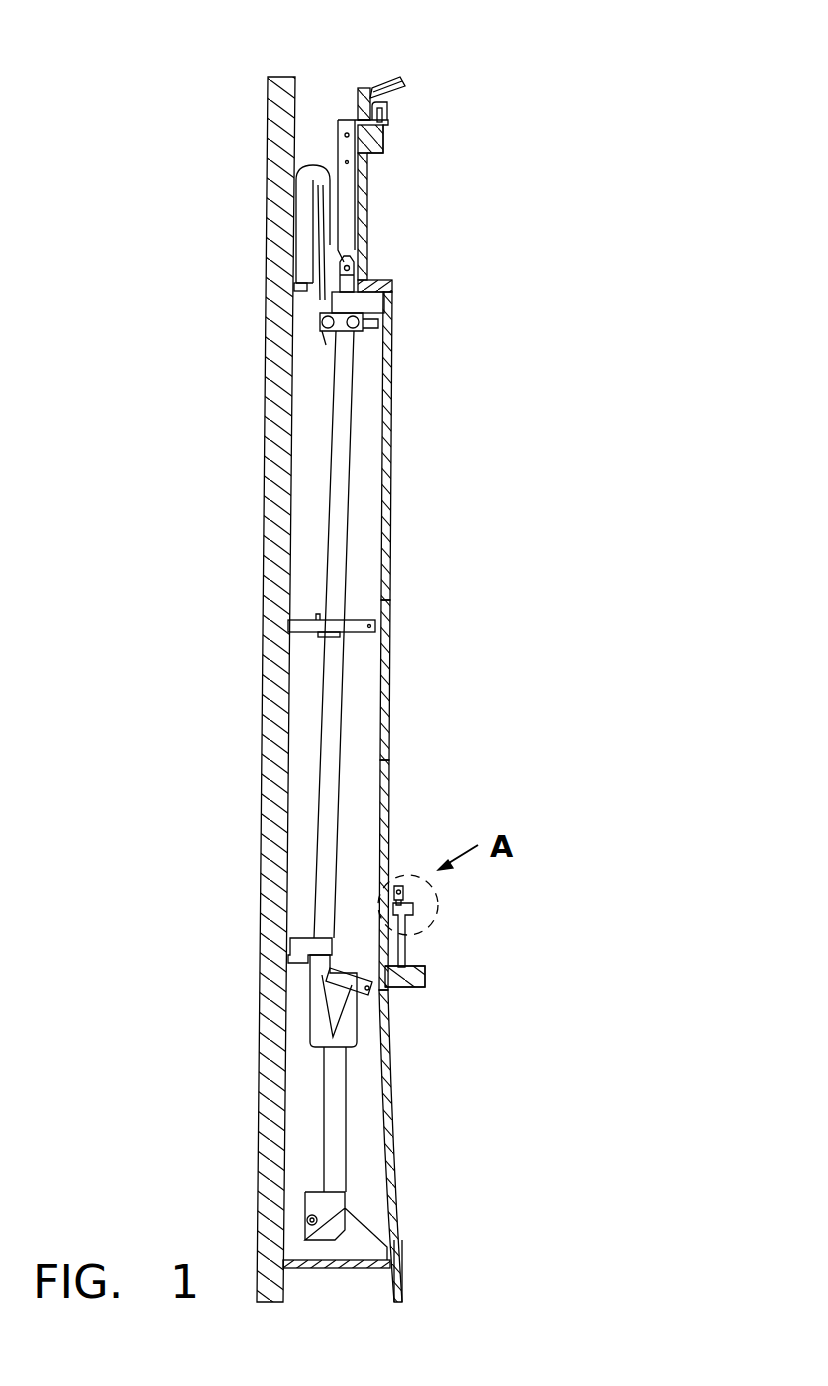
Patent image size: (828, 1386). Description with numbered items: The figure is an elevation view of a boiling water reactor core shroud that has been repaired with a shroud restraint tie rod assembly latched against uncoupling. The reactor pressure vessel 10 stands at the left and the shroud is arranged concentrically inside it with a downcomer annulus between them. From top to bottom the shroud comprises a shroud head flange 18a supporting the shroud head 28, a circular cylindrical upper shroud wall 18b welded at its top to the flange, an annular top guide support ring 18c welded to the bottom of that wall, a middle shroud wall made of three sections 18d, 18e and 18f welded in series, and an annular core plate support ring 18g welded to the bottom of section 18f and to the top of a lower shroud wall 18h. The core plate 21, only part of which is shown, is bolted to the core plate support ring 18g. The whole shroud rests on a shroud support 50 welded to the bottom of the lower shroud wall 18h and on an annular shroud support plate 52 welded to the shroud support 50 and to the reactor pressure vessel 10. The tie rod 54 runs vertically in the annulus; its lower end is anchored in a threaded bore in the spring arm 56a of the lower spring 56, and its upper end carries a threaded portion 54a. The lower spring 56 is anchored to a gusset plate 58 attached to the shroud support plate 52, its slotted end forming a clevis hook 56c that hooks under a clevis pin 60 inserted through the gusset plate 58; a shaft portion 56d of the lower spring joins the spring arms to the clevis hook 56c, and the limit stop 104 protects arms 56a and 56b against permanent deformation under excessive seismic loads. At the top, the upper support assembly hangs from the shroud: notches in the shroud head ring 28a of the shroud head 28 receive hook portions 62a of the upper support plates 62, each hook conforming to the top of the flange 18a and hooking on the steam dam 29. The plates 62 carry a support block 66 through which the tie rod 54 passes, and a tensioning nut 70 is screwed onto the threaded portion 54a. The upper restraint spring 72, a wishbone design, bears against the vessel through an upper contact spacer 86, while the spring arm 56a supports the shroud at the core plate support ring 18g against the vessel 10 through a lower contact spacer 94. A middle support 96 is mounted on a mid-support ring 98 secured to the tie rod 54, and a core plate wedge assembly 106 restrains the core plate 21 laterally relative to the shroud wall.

The reactor pressure vessel 10 is at (266, 538).
The shroud head flange 18a is at (384, 140).
The upper shroud wall 18b is at (368, 227).
The top guide support ring 18c is at (392, 287).
The middle shroud wall section 18d is at (392, 438).
The middle shroud wall section 18e is at (392, 689).
The middle shroud wall section 18f is at (392, 798).
The core plate support ring 18g is at (414, 988).
The lower shroud wall 18h is at (400, 1146).
The core plate 21 is at (407, 953).
The shroud head 28 is at (379, 72).
The shroud head ring 28a is at (357, 100).
The steam dam 29 is at (383, 122).
The shroud support 50 is at (402, 1246).
The shroud support plate 52 is at (330, 1269).
The tie rod 54 is at (318, 787).
The threaded portion 54a is at (352, 280).
The lower spring 56 is at (328, 1107).
The spring arm 56a is at (312, 1018).
The spring arm 56b is at (358, 1010).
The clevis hook 56c is at (338, 1201).
The actuator shaft 56d is at (340, 1098).
The gusset plate 58 is at (293, 1210).
The clevis pin 60 is at (307, 1222).
The upper support plate 62 is at (338, 144).
The hook portion 62a is at (390, 113).
The support block 66 is at (385, 342).
The tensioning nut 70 is at (349, 303).
The upper restraint spring 72 is at (300, 178).
The upper contact spacer 86 is at (295, 288).
The lower contact spacer 94 is at (302, 932).
The middle support 96 is at (358, 622).
The mid-support ring 98 is at (340, 635).
The limit stop 104 is at (388, 943).
The core plate wedge assembly 106 is at (411, 864).